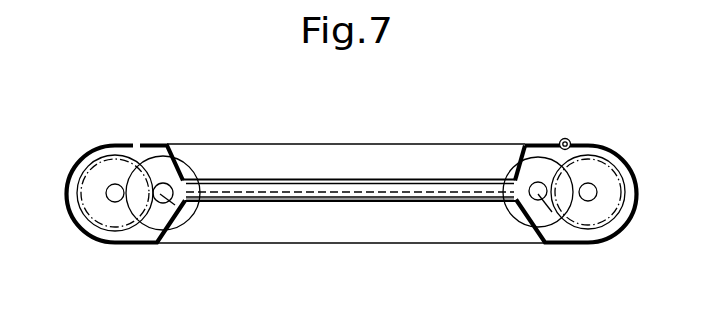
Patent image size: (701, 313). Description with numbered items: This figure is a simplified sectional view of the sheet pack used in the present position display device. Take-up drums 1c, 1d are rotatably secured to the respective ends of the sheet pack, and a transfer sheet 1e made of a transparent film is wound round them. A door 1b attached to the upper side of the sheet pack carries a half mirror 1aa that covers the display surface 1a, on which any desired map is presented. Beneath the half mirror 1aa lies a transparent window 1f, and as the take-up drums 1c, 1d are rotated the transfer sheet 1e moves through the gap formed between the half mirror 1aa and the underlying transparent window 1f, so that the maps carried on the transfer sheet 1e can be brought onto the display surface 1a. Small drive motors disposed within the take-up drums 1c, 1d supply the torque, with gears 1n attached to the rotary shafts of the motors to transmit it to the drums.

The display surface 1a is at (427, 161).
The half mirror 1aa is at (380, 179).
The door 1b is at (547, 139).
The take-up drum 1c is at (78, 177).
The take-up drum 1d is at (621, 173).
The transfer sheet 1e is at (379, 202).
The transparent window 1f is at (305, 202).
The gear 1n is at (108, 201).